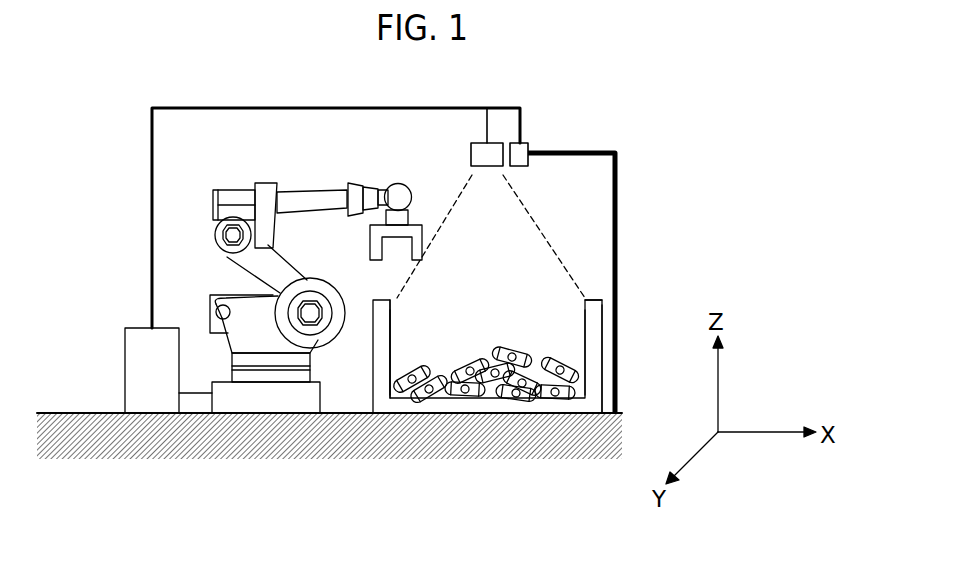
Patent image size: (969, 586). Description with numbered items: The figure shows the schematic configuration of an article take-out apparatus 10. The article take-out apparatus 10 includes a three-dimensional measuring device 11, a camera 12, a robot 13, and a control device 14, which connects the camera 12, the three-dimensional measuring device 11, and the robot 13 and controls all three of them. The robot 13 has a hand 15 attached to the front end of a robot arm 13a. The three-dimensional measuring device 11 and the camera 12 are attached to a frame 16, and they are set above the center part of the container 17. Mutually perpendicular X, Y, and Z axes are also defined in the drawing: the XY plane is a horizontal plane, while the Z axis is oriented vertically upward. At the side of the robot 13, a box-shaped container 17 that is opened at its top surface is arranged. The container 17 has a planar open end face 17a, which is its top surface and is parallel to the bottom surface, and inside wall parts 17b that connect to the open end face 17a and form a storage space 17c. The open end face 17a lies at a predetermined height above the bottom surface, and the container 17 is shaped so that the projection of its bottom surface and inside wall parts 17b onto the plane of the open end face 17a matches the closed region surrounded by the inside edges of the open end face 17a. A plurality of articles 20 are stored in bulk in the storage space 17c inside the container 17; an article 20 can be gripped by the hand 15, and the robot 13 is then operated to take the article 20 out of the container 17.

The article take-out apparatus 10 is at (95, 175).
The 3D measuring device 11 is at (470, 153).
The camera 12 is at (530, 142).
The robot 13 is at (316, 266).
The robot arm 13a is at (317, 191).
The control device 14 is at (124, 348).
The hand 15 is at (372, 253).
The frame 16 is at (596, 151).
The container 17 is at (501, 367).
The open end face 17a is at (590, 296).
The inside wall parts 17b is at (393, 330).
The storage space 17c is at (572, 355).
The articles 20 is at (506, 345).